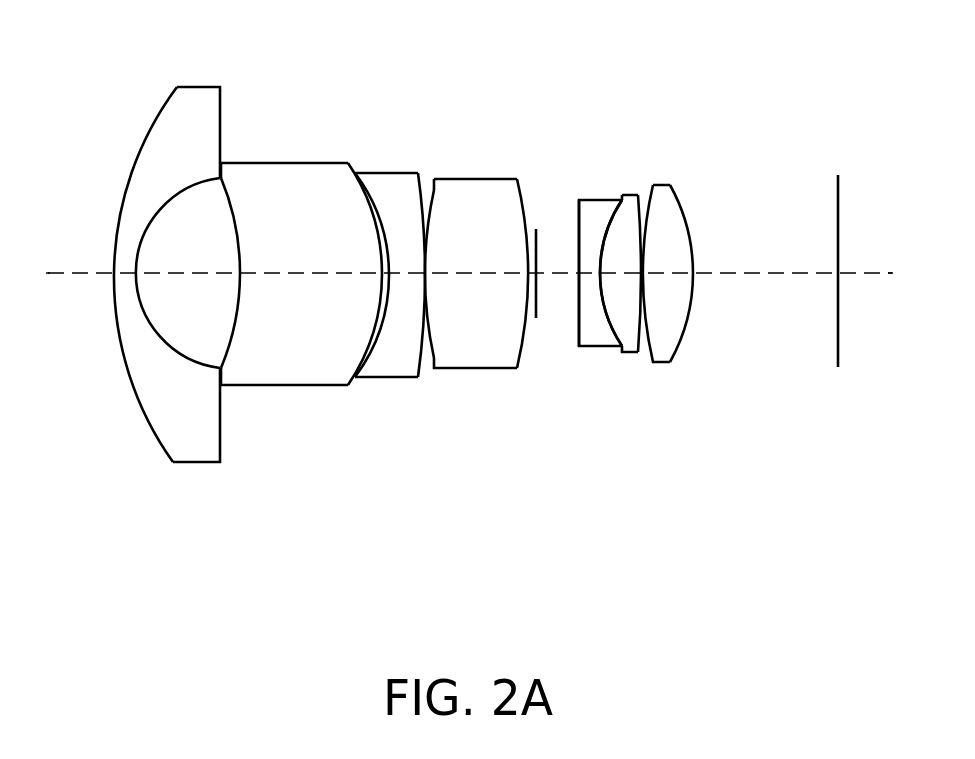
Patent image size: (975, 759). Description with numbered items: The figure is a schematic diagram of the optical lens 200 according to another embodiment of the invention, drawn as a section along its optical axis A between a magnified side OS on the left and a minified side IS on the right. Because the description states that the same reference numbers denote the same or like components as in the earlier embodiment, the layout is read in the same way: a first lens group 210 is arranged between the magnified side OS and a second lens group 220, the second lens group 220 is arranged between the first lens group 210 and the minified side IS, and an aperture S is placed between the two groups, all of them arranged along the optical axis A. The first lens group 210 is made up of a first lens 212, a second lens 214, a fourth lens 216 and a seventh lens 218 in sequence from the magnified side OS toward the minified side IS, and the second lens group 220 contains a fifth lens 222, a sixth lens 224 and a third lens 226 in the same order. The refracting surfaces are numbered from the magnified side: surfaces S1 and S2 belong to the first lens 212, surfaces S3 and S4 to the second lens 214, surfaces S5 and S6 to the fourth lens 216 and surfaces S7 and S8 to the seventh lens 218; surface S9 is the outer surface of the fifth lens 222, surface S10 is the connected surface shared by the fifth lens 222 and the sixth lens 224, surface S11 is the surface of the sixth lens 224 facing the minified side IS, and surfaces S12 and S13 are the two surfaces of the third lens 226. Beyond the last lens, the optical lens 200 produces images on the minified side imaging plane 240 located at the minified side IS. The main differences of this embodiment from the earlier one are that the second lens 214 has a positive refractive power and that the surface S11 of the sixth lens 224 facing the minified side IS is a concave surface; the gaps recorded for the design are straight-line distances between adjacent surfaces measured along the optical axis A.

The optical lens 200 is at (903, 607).
The first lens group 210 is at (475, 546).
The first lens 212 is at (198, 286).
The second lens 214 is at (299, 328).
The third lens 216 is at (391, 314).
The fourth lens 218 is at (477, 321).
The second lens group 220 is at (731, 489).
The fifth lens 222 is at (585, 284).
The sixth lens 224 is at (641, 284).
The seventh lens 226 is at (688, 303).
The image plane / image sensor 240 is at (838, 343).
The aperture S is at (537, 310).
The surface S1 is at (162, 108).
The surface S2 is at (185, 191).
The surface S3 is at (235, 237).
The surface S4 is at (373, 215).
The surface S5 is at (354, 166).
The surface S6 is at (425, 176).
The surface S7 is at (431, 197).
The surface S8 is at (520, 193).
The surface S9 is at (579, 212).
The connected surface S10 is at (612, 217).
The surface S11 is at (647, 205).
The surface S12 is at (643, 195).
The surface S13 is at (678, 195).
The optical axis A is at (58, 276).
The magnified side OS is at (31, 277).
The minified side IS is at (904, 273).